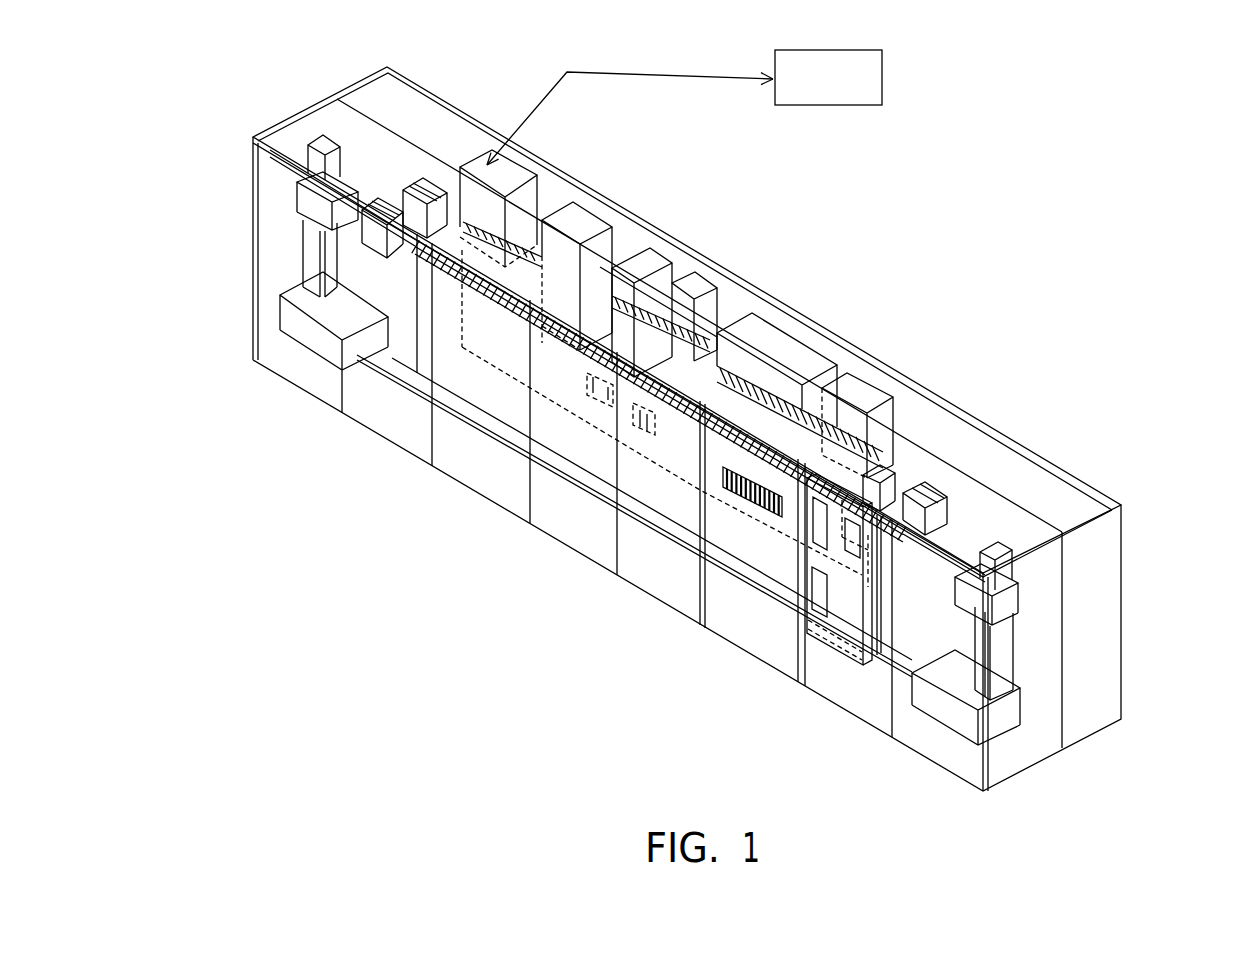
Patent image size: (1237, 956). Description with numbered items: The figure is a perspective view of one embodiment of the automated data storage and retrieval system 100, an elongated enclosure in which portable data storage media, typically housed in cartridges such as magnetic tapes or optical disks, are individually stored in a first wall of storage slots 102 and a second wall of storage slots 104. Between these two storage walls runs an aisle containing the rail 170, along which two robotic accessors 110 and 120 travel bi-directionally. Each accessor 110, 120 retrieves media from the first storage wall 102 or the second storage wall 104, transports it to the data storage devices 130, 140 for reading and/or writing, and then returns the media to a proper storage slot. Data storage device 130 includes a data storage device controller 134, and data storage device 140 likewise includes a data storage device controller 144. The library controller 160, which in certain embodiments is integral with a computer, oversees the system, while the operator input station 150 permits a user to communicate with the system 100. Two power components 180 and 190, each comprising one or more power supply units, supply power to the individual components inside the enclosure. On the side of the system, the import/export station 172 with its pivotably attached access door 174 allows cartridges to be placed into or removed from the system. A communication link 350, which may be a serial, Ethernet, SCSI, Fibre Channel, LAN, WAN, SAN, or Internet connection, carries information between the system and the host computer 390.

The automated data storage and retrieval system 100 is at (726, 712).
The first wall of storage slots 102 is at (513, 225).
The second wall of storage slots 104 is at (465, 390).
The accessor 110 is at (303, 201).
The accessor 120 is at (1015, 605).
The data storage device 130 is at (665, 260).
The data storage device controller 134 is at (598, 395).
The data storage device 140 is at (705, 287).
The data storage device controller 144 is at (645, 413).
The operator input station 150 is at (618, 205).
The library controller 160 is at (525, 178).
The rail 170 is at (563, 487).
The import/export station 172 is at (858, 663).
The access door 174 is at (827, 620).
The power component 180 is at (925, 487).
The power component 190 is at (905, 528).
The communication link 350 is at (705, 80).
The host computer 390 is at (848, 90).